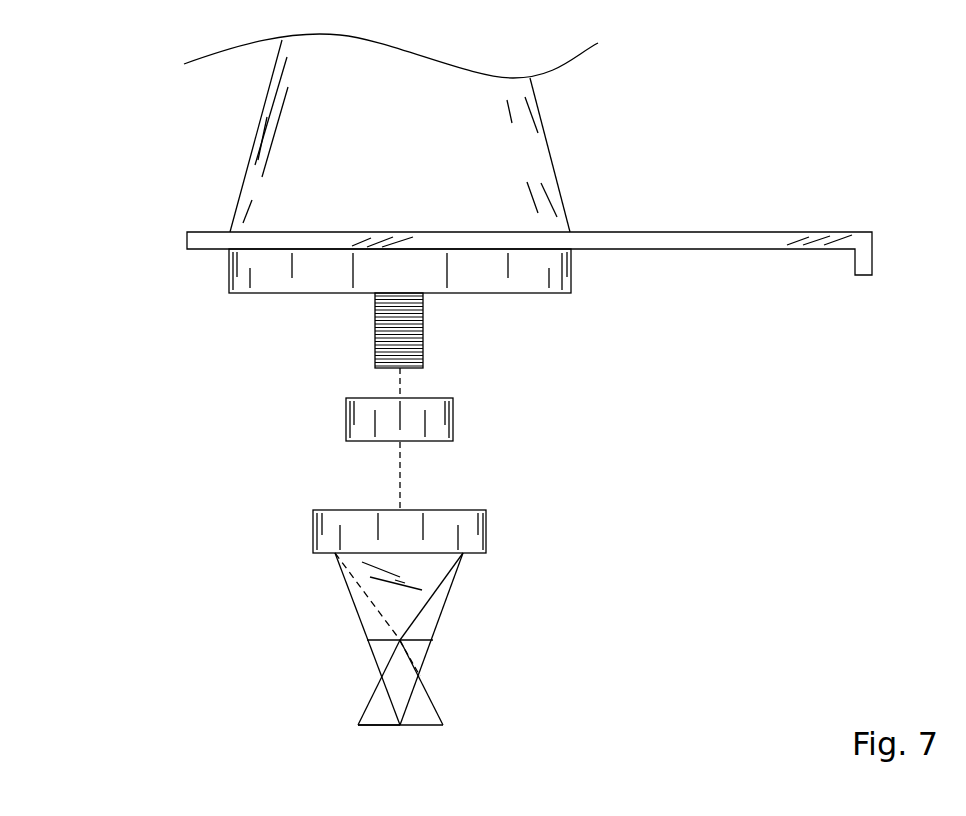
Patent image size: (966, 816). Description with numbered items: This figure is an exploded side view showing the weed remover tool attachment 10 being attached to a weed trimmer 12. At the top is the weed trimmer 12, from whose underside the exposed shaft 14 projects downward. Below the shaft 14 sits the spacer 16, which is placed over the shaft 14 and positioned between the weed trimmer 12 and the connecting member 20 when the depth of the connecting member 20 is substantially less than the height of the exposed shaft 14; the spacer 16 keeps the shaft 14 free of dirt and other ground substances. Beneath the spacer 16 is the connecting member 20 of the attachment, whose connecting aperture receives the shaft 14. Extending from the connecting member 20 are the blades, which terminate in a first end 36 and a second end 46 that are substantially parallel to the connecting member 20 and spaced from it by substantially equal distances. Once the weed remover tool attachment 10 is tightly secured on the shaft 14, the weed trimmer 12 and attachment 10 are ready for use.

The weed remover tool attachment 10 is at (212, 462).
The weed trimmer 12 is at (246, 191).
The shaft 14 is at (423, 354).
The spacer 16 is at (446, 428).
The connecting member 20 is at (462, 514).
The first end 36 is at (423, 725).
The second end 46 is at (378, 725).